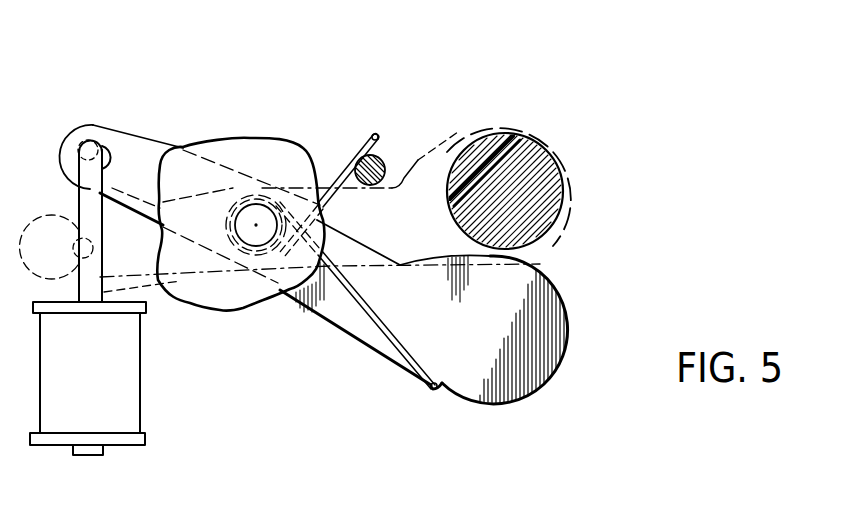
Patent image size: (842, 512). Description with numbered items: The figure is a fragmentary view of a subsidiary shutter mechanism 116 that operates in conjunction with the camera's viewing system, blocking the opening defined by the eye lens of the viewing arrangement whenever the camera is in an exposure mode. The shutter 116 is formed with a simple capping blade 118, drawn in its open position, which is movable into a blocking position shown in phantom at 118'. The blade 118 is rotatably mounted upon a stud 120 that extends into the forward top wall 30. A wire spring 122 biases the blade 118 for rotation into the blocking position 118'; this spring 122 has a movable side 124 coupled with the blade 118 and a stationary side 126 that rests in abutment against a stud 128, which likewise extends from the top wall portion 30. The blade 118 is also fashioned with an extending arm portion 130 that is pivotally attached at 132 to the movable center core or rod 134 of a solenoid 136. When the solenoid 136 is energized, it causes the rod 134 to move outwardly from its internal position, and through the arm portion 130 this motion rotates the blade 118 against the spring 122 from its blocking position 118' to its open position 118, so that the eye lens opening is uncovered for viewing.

The forward top wall 30 is at (238, 147).
The subsidiary shutter mechanism 116 is at (533, 102).
The capping blade 118 is at (446, 312).
The blocking position of capping blade 118' is at (544, 191).
The stud 120 is at (258, 212).
The wire spring 122 is at (310, 170).
The movable side 124 is at (395, 341).
The stationary side 126 is at (378, 135).
The stud 128 is at (381, 166).
The extending arm portion 130 is at (145, 153).
The pivotal attachment 132 is at (90, 150).
The rod 134 is at (90, 192).
The solenoid 136 is at (115, 356).